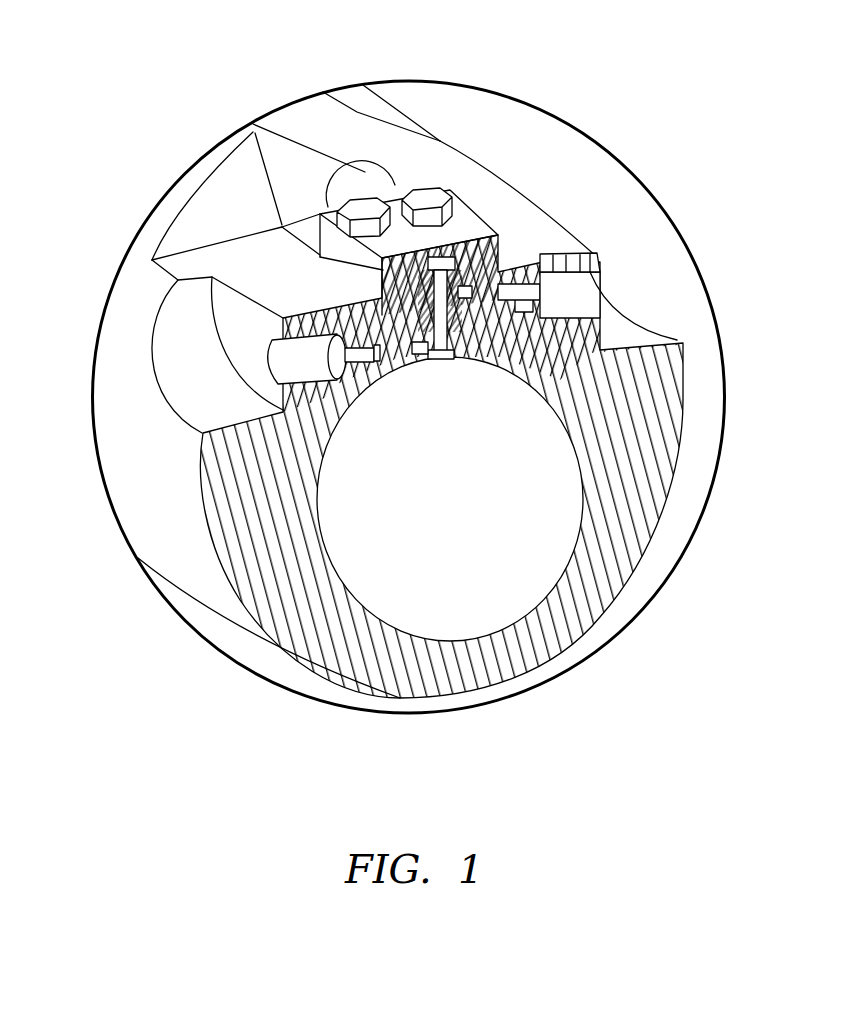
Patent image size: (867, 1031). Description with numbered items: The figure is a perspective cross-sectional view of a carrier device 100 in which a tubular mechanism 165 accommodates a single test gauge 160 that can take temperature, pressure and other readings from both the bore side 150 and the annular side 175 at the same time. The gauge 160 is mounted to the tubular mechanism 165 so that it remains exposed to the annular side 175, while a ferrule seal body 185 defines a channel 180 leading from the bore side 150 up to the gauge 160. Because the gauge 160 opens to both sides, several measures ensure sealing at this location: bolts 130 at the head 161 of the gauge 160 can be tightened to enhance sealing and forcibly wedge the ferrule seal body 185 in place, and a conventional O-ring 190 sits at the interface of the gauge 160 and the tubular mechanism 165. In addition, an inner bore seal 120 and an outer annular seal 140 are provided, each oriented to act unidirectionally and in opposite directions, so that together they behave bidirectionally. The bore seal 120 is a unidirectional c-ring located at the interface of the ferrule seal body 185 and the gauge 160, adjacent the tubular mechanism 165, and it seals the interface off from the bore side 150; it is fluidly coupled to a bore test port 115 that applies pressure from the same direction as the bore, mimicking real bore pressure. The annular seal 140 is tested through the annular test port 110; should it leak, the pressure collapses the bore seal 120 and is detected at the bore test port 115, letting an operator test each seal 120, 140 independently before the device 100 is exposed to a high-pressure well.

The carrier device 100 is at (563, 151).
The annular test port 110 is at (577, 295).
The bore test port 115 is at (281, 367).
The bore seal 120 is at (282, 224).
The bolts 130 is at (428, 190).
The annular seal 140 is at (465, 292).
The bore side 150 is at (427, 537).
The test gauge 160 is at (278, 140).
The head 161 is at (396, 235).
The tubular mechanism 165 is at (112, 463).
The annular side 175 is at (627, 251).
The channel 180 is at (443, 257).
The ferrule seal body 185 is at (441, 362).
The O-ring 190 is at (336, 249).